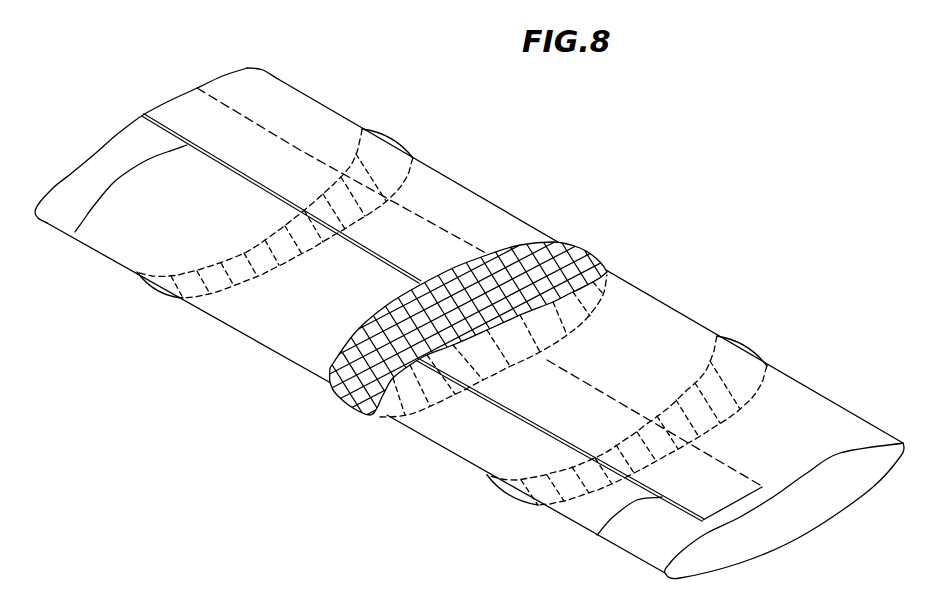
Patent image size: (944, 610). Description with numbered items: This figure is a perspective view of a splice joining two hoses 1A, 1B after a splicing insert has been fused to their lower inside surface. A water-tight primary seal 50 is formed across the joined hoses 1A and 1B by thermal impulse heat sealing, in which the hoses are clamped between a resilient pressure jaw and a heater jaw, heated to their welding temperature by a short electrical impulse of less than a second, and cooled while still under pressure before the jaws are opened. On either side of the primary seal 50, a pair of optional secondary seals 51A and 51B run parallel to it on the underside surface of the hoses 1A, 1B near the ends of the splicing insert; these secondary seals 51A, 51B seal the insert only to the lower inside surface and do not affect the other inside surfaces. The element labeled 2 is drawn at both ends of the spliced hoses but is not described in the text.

The hose 1A is at (376, 85).
The hose 1B is at (440, 505).
The blade skin 2 is at (75, 232).
The primary seal 50 is at (601, 239).
The secondary seal 51A is at (401, 126).
The secondary seal 51B is at (759, 335).